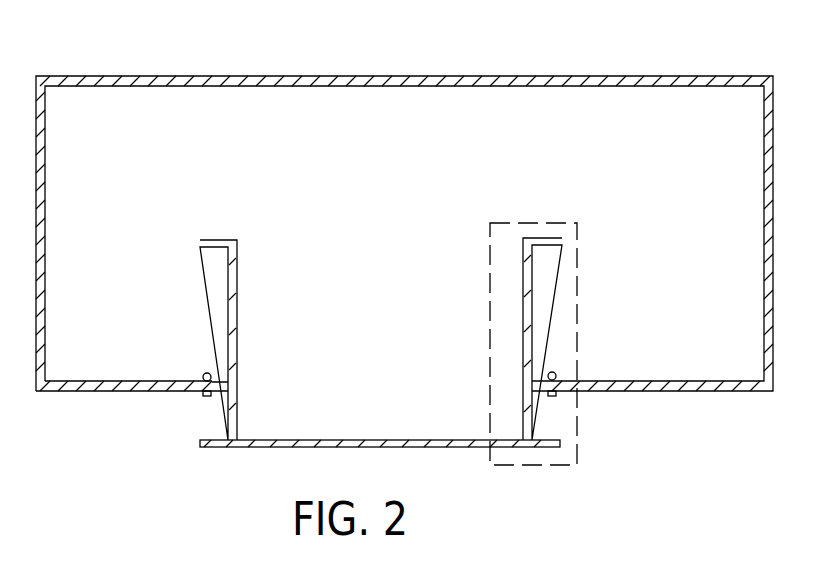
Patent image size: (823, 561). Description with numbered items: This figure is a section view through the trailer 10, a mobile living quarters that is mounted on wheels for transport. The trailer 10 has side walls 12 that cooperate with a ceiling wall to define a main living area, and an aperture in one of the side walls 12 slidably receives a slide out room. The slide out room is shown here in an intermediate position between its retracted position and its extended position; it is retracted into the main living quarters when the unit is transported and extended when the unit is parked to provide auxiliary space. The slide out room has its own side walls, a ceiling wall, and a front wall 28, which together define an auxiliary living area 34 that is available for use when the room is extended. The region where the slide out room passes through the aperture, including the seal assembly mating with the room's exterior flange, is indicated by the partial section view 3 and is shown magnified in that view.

The trailer 10 is at (428, 52).
The side walls 12 is at (665, 391).
The partial section view 3 is at (577, 267).
The front wall 28 is at (315, 438).
The auxiliary living area 34 is at (405, 352).